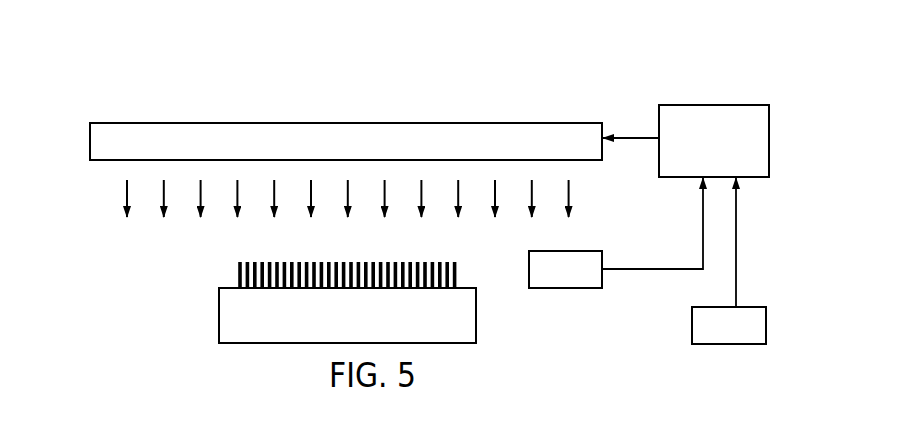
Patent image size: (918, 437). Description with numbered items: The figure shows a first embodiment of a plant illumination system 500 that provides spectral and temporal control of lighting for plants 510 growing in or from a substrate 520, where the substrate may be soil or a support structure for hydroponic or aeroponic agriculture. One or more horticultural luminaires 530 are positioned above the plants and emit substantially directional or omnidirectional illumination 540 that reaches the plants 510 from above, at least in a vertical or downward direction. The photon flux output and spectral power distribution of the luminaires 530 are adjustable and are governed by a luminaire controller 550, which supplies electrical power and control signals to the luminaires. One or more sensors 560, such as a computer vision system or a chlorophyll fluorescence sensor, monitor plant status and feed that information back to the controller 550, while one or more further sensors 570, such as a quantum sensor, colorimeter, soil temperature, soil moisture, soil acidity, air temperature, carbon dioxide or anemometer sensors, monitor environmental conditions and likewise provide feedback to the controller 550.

The plant illumination system 500 is at (152, 62).
The plants 510 is at (238, 276).
The substrate 520 is at (219, 321).
The horticultural luminaires 530 is at (315, 123).
The illumination 540 is at (125, 196).
The luminaire controller 550 is at (716, 105).
The sensors 560 is at (602, 258).
The sensors 570 is at (740, 307).